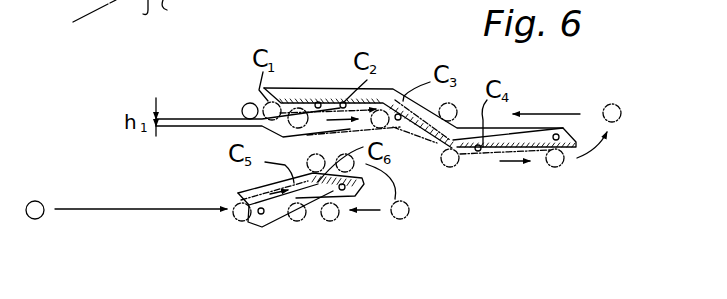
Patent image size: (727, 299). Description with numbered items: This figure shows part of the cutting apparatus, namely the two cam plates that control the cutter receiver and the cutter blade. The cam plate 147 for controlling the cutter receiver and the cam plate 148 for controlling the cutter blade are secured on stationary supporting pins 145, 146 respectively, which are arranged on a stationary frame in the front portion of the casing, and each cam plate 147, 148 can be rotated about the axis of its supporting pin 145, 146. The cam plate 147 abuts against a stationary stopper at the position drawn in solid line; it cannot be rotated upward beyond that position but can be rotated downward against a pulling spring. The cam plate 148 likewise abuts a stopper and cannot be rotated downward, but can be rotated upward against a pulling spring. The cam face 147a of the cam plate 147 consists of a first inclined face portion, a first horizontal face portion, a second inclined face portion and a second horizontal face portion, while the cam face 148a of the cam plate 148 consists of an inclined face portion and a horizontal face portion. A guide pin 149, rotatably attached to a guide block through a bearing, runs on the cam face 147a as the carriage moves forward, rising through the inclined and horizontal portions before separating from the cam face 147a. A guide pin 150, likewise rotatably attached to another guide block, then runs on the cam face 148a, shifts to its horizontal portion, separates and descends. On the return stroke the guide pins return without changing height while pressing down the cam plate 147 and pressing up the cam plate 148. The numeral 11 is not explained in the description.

The adjacent figure element 11 is at (183, 3).
The supporting pin 145 is at (557, 139).
The supporting pin 146 is at (345, 200).
The cam plate 147 is at (398, 114).
The cam face 147a is at (318, 102).
The cam plate 148 is at (311, 206).
The cam face 148a is at (258, 222).
The guide pin 149 is at (241, 110).
The guide pin 150 is at (37, 201).